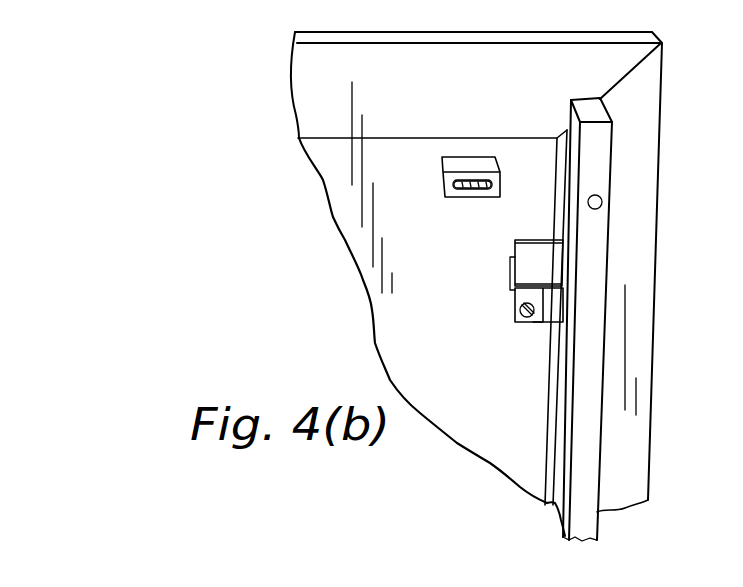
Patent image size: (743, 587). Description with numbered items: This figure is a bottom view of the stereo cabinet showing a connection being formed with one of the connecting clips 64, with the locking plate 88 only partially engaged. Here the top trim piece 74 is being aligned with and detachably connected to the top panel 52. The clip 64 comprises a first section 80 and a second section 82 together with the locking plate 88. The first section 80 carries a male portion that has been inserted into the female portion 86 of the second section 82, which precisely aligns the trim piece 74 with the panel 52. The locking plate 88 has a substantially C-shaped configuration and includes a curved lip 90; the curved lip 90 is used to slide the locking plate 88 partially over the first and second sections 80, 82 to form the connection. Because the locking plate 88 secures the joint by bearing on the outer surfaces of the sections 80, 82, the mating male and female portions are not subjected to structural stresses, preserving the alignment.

The top panel 52 is at (343, 218).
The top trim piece 74 is at (607, 245).
The second section 82 is at (450, 162).
The female portion 86 is at (462, 190).
The locking plate 88 is at (530, 255).
The first section 80 is at (520, 302).
The curved lip 90 is at (518, 293).
The clip 64 is at (538, 323).